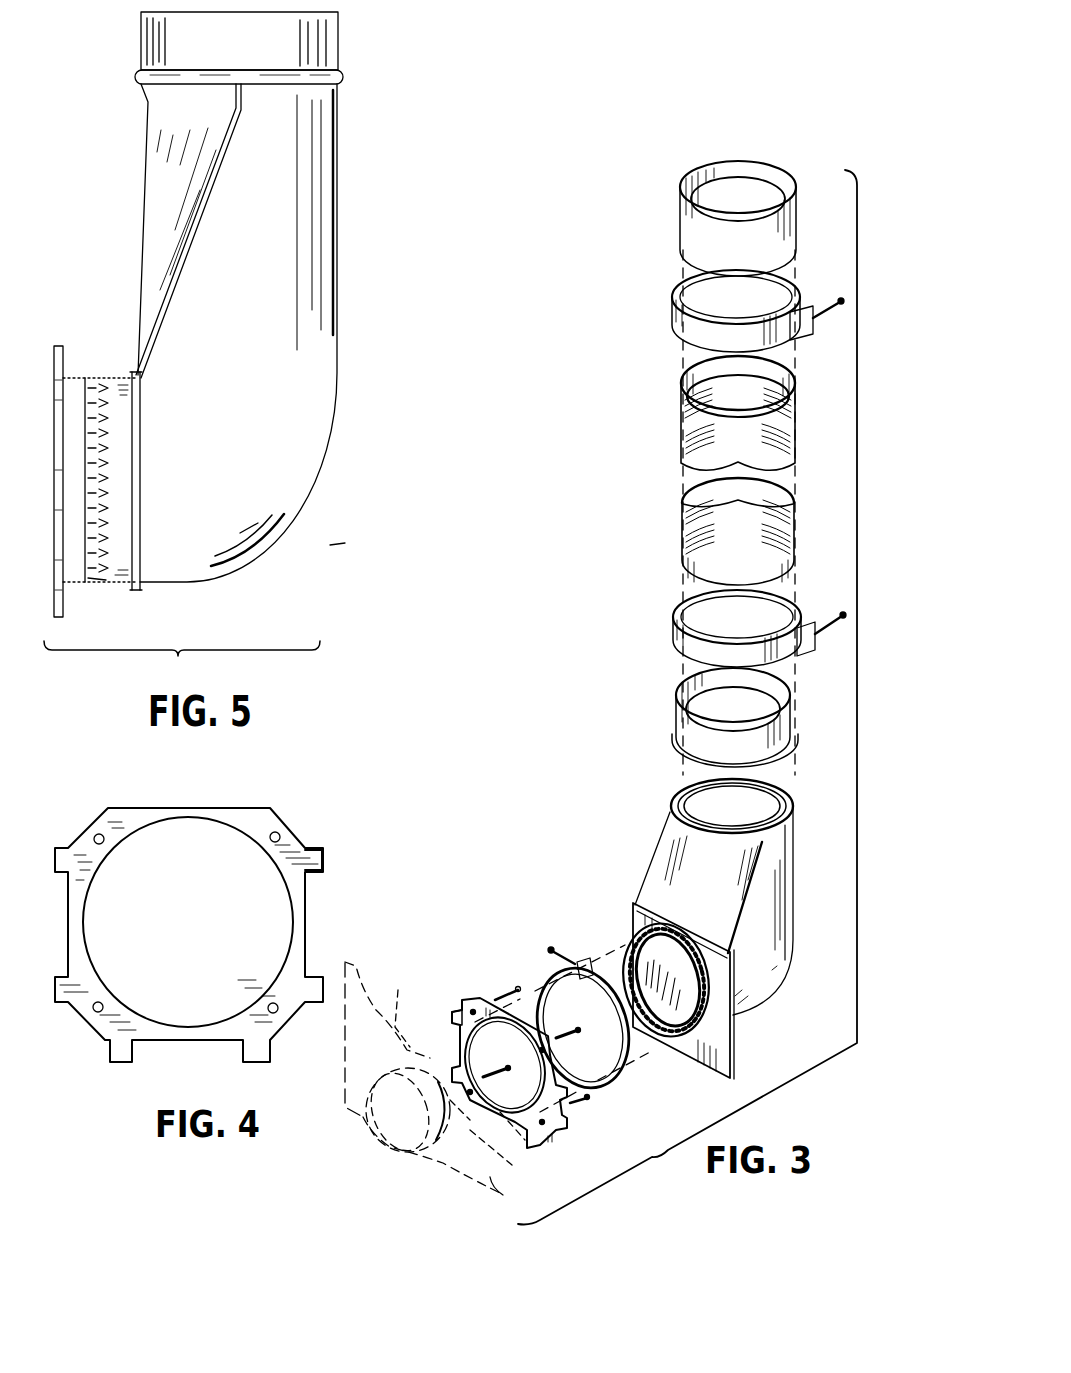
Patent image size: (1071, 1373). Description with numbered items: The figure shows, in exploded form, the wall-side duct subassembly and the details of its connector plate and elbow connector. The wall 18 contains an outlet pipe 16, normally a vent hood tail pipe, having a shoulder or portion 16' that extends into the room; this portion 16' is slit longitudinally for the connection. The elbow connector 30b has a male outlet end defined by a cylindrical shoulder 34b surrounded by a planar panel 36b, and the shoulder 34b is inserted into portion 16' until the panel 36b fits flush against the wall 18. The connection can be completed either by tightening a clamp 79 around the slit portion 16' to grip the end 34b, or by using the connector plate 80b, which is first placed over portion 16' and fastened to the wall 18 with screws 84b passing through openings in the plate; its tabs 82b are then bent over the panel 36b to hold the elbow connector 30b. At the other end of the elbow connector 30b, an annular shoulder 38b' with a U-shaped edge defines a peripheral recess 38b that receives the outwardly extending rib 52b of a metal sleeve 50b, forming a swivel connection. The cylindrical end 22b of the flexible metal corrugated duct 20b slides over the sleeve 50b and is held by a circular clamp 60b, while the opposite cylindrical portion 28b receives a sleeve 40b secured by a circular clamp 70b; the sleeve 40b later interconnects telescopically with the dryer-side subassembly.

In FIG. 3, the outlet pipe 16 is at (416, 1078).
In FIG. 3, the shoulder of outlet pipe 16' is at (492, 1143).
In FIG. 3, the wall 18 is at (405, 1066).
In FIG. 3, the flexible metal corrugated duct 20b is at (680, 517).
In FIG. 3, the cylindrical end of duct 22b is at (683, 553).
In FIG. 3, the cylindrical portion of duct 28b is at (686, 408).
In FIG. 5, the elbow connector 30b is at (308, 492).
In FIG. 3, the elbow connector 30b is at (792, 938).
In FIG. 5, the cylindrical shoulder 34b is at (113, 373).
In FIG. 3, the cylindrical shoulder 34b is at (628, 946).
In FIG. 5, the planar panel 36b is at (140, 545).
In FIG. 3, the planar panel 36b is at (633, 918).
In FIG. 3, the peripheral recess 38b is at (689, 806).
In FIG. 3, the annular shoulder 38b' is at (682, 811).
In FIG. 3, the sleeve 40b is at (690, 245).
In FIG. 5, the metal sleeve 50b is at (328, 33).
In FIG. 3, the metal sleeve 50b is at (678, 732).
In FIG. 3, the outwardly extending rib 52b is at (690, 752).
In FIG. 3, the circular clamp 60b is at (681, 652).
In FIG. 3, the circular clamp 70b is at (686, 320).
In FIG. 3, the clamp 79 is at (538, 974).
In FIG. 5, the connector plate 80b is at (63, 600).
In FIG. 4, the connector plate 80b is at (295, 840).
In FIG. 3, the connector plate 80b is at (478, 996).
In FIG. 4, the tabs 82b is at (320, 858).
In FIG. 3, the tabs 82b is at (455, 1012).
In FIG. 3, the screws 84b is at (505, 995).